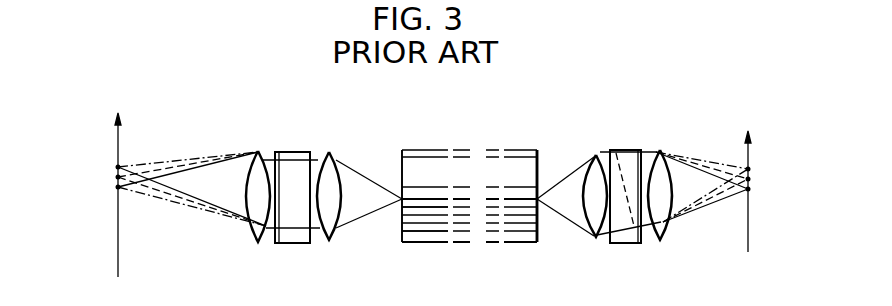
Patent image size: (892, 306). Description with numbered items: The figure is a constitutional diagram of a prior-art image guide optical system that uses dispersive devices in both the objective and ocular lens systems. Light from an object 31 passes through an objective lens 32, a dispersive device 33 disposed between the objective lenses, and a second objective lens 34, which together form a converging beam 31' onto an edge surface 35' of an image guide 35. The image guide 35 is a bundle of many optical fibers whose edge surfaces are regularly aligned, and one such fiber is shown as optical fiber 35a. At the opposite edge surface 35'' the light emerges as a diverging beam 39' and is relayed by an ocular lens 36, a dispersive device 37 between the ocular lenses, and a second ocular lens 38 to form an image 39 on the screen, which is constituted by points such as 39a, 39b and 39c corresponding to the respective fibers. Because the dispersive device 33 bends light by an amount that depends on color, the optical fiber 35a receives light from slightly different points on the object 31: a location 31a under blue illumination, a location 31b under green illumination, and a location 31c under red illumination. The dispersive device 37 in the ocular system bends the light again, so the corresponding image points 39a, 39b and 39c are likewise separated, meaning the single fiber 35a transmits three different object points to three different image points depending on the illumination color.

The object 31 is at (146, 192).
The location on the object for blue light 31a is at (116, 167).
The location on the object for green light 31b is at (116, 177).
The location on the object for red light 31c is at (116, 188).
The intermediate image / converging beam 31' is at (369, 221).
The objective lens 32 is at (258, 151).
The dispersive device 33 is at (293, 152).
The objective lens 34 is at (332, 152).
The image guide 35 is at (469, 167).
The edge surface of the image guide 35' is at (387, 176).
The exit surface 35'' is at (553, 173).
The optical fiber 35a is at (437, 205).
The ocular lens 36 is at (596, 155).
The dispersive device 37 is at (624, 150).
The ocular lens 38 is at (659, 150).
The image 39 is at (734, 171).
The diverging beam 39' is at (565, 219).
The image point for blue light 39a is at (750, 169).
The image point for green light 39b is at (750, 179).
The image point for red light 39c is at (750, 189).